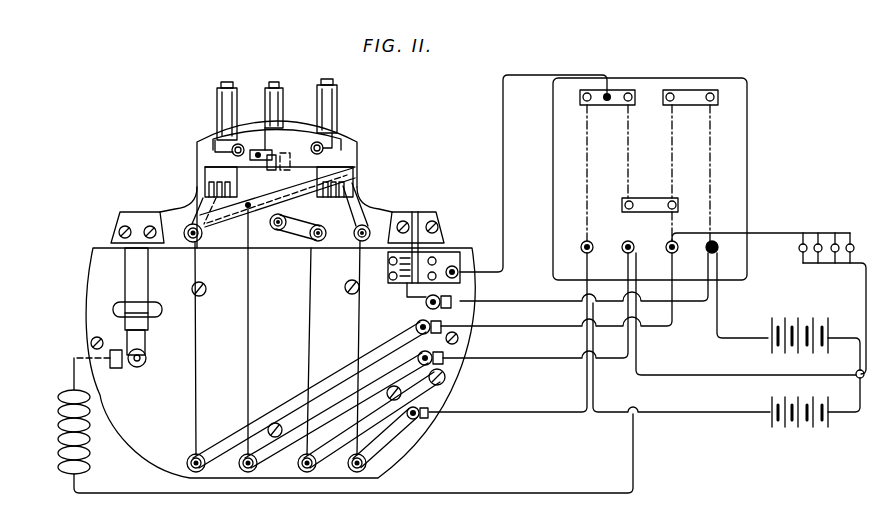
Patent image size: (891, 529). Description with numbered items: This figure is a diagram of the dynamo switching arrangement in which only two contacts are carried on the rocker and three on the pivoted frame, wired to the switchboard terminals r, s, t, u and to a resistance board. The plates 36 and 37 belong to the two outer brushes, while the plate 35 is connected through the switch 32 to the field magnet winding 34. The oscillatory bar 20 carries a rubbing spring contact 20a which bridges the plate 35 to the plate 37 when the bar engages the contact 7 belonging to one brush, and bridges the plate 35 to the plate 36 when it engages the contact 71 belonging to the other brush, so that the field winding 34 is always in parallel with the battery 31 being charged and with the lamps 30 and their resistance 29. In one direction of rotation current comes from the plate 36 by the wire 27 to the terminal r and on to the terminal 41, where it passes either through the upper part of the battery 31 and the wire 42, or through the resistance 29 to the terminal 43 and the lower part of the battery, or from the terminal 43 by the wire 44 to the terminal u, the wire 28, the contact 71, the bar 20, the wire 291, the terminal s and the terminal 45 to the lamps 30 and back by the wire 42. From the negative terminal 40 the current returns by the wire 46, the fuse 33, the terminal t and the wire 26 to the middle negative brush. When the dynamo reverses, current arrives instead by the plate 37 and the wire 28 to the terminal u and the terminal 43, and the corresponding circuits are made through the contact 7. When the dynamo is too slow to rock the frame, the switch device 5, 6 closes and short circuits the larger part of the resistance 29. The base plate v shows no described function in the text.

The switch device 5 is at (444, 252).
The switch device 6 is at (438, 218).
The switch contact 7 is at (237, 182).
The switch contact 71 is at (290, 178).
The oscillatory bar 20 is at (296, 197).
The rubbing spring contact 20a is at (300, 155).
The wire 26 is at (312, 321).
The wire 27 is at (197, 335).
The wire 28 is at (356, 318).
The resistance 29 is at (650, 179).
The wire 291 is at (249, 272).
The lamps 30 is at (808, 263).
The battery 31 is at (762, 408).
The switch 32 is at (125, 270).
The fuse 33 is at (423, 383).
The field magnet winding 34 is at (90, 438).
The plate 35 is at (262, 150).
The plate 36 is at (239, 144).
The plate 37 is at (320, 143).
The negative terminal 40 is at (622, 241).
The terminal 41 is at (718, 247).
The wire 42 is at (695, 374).
The terminal 43 is at (575, 248).
The wire 44 is at (587, 380).
The terminal 45 is at (662, 248).
The wire 46 is at (544, 358).
The terminal r is at (200, 472).
The terminal s is at (250, 472).
The terminal t is at (307, 472).
The terminal u is at (360, 472).
The base plate v is at (280, 363).